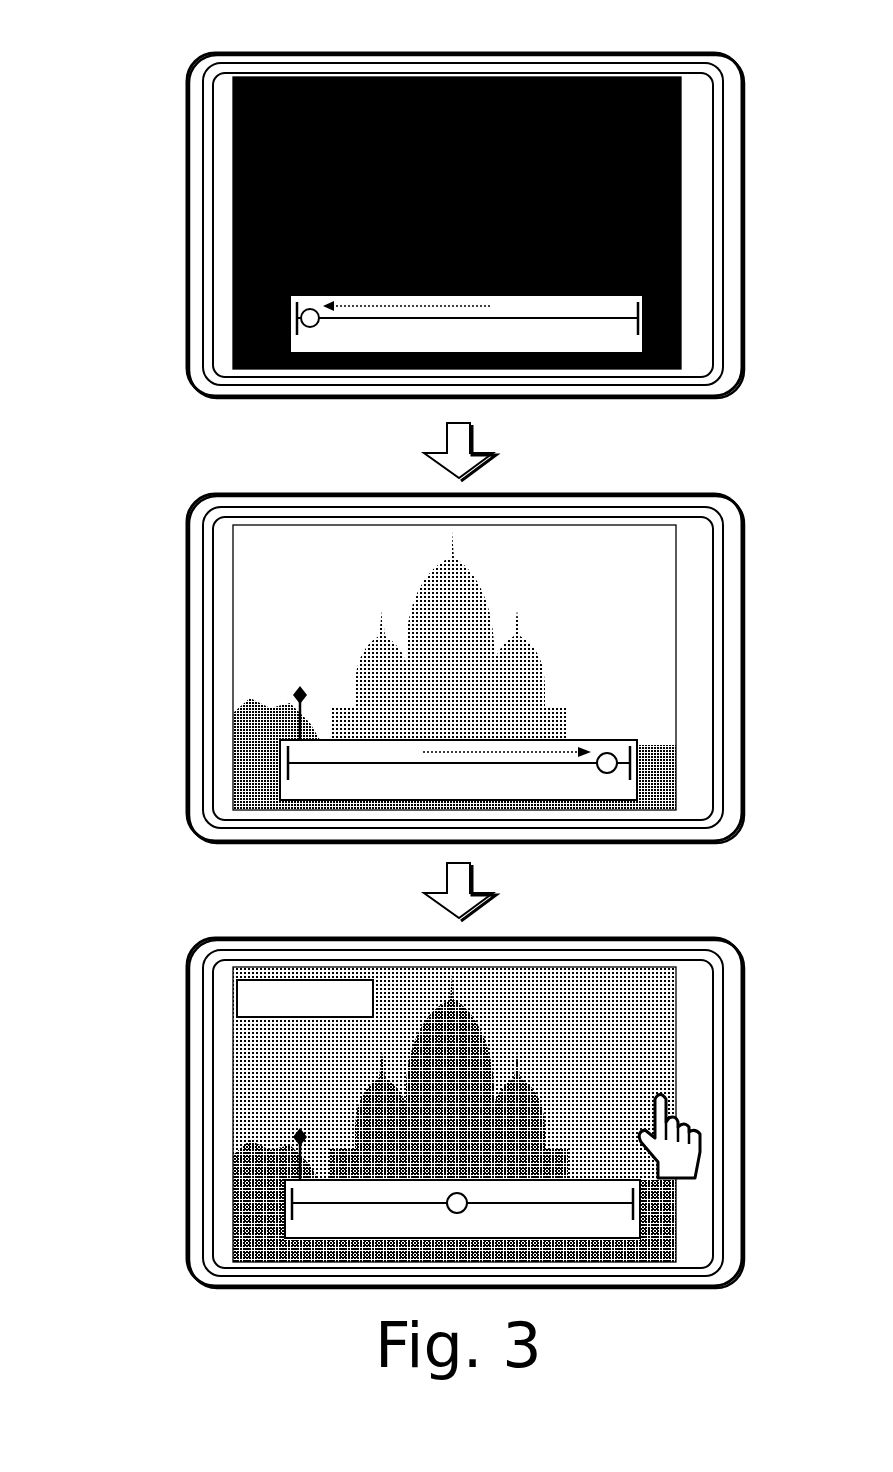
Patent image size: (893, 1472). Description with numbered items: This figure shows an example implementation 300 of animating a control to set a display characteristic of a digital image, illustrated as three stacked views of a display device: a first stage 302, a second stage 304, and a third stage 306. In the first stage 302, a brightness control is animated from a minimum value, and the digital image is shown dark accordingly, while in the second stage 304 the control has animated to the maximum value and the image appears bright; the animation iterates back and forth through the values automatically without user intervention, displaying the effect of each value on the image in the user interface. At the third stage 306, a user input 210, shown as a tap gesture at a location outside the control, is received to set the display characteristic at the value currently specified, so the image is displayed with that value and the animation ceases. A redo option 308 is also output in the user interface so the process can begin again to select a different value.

The example implementation 300 is at (106, 46).
The first stage 302 is at (404, 224).
The second stage 304 is at (404, 665).
The third stage 306 is at (426, 1105).
The user input 210 is at (701, 1128).
The redo option 308 is at (305, 998).